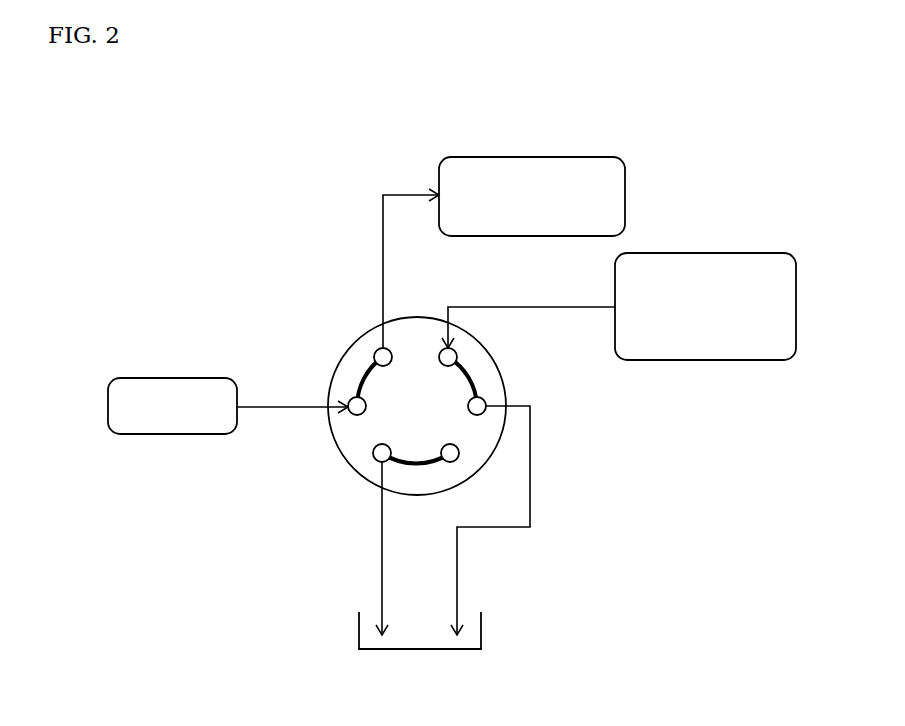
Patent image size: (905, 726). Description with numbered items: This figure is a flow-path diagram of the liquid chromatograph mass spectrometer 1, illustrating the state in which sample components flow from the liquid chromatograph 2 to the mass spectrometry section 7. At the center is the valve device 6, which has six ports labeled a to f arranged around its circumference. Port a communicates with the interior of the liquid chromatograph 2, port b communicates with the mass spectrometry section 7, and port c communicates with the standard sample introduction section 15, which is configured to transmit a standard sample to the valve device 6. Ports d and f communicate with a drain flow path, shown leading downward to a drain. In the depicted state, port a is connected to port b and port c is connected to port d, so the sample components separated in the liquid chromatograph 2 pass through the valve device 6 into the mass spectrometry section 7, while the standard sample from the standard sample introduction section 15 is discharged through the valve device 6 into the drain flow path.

The analysis system 1 is at (307, 208).
The liquid chromatograph 2 is at (178, 434).
The valve device 6 is at (357, 342).
The mass spectrometry section 7 is at (517, 157).
The standard sample introduction section 15 is at (717, 257).